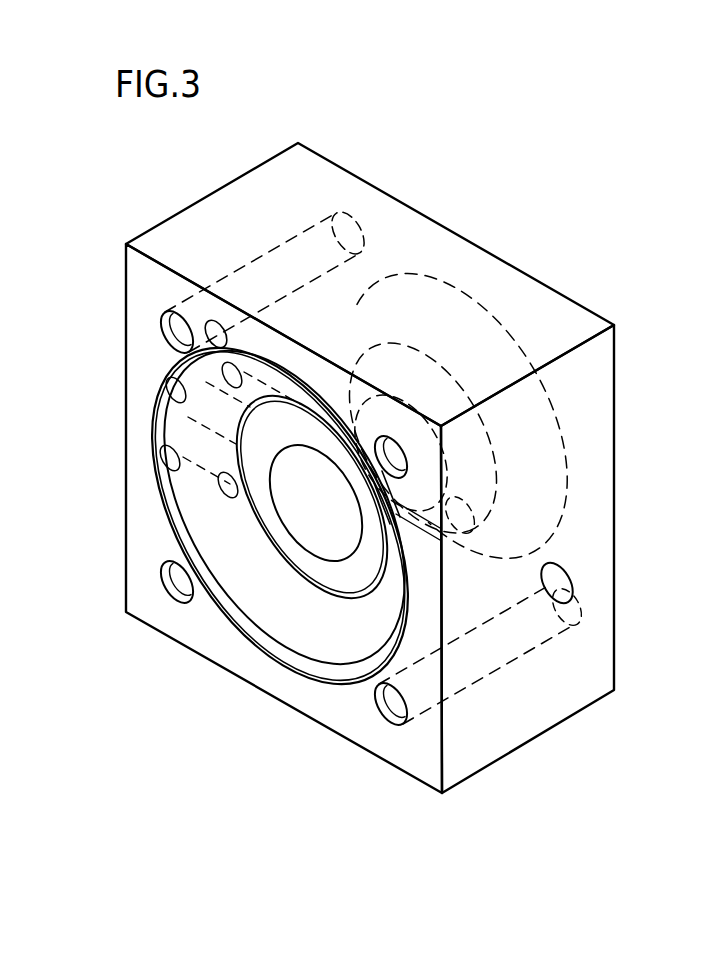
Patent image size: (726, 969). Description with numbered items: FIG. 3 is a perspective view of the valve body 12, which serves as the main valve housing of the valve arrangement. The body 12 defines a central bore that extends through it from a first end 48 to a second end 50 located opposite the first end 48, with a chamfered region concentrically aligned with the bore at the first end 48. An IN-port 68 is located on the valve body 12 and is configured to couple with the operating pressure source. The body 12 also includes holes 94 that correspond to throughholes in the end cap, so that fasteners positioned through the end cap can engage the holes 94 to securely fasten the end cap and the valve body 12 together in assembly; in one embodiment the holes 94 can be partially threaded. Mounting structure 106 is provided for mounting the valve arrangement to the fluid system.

The valve body 12 is at (464, 181).
The first end 48 is at (323, 705).
The second end 50 is at (614, 424).
The IN-port 68 is at (562, 569).
The holes 94 is at (250, 263).
The mounting structure 106 is at (168, 332).